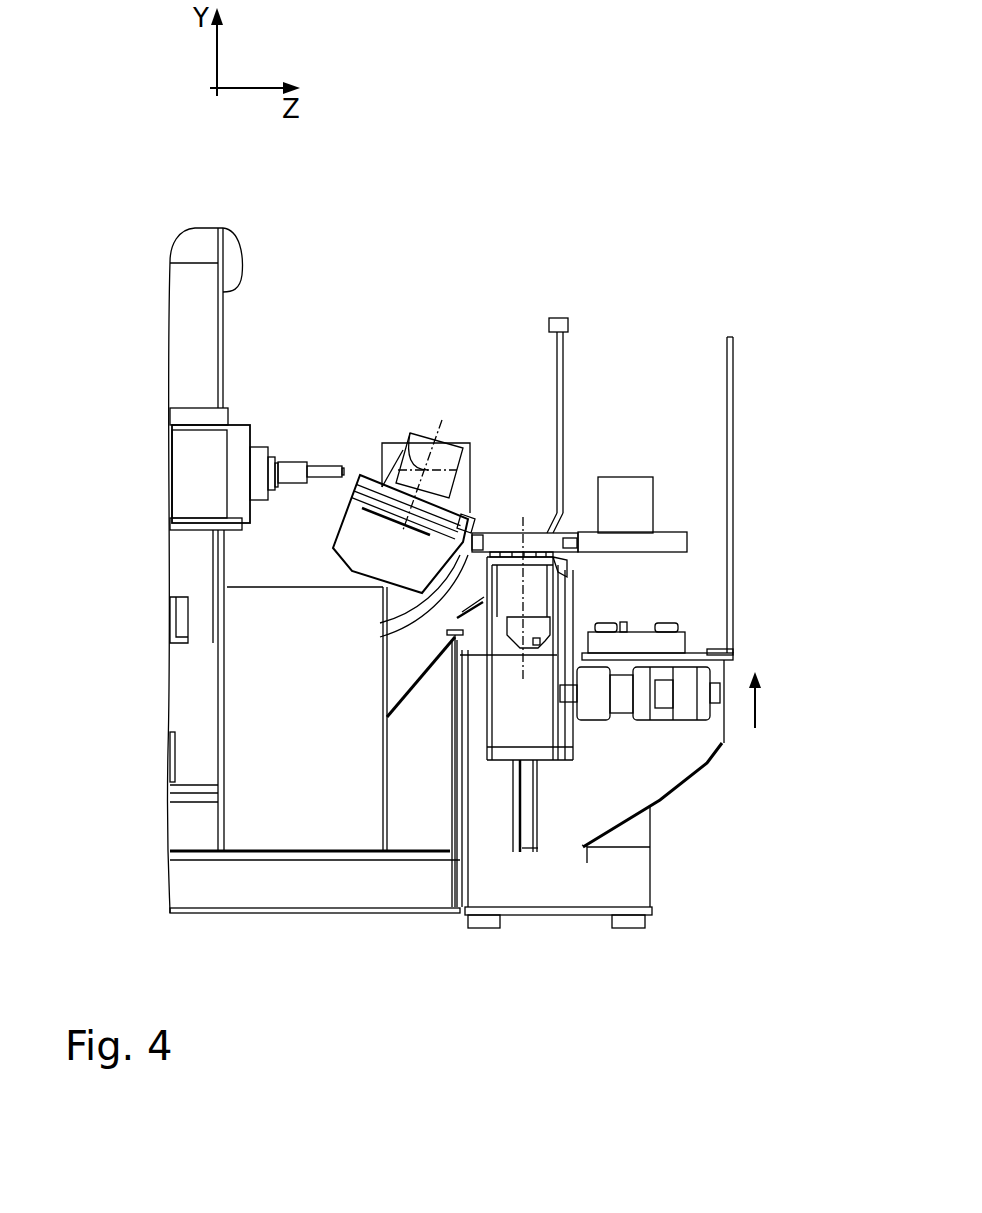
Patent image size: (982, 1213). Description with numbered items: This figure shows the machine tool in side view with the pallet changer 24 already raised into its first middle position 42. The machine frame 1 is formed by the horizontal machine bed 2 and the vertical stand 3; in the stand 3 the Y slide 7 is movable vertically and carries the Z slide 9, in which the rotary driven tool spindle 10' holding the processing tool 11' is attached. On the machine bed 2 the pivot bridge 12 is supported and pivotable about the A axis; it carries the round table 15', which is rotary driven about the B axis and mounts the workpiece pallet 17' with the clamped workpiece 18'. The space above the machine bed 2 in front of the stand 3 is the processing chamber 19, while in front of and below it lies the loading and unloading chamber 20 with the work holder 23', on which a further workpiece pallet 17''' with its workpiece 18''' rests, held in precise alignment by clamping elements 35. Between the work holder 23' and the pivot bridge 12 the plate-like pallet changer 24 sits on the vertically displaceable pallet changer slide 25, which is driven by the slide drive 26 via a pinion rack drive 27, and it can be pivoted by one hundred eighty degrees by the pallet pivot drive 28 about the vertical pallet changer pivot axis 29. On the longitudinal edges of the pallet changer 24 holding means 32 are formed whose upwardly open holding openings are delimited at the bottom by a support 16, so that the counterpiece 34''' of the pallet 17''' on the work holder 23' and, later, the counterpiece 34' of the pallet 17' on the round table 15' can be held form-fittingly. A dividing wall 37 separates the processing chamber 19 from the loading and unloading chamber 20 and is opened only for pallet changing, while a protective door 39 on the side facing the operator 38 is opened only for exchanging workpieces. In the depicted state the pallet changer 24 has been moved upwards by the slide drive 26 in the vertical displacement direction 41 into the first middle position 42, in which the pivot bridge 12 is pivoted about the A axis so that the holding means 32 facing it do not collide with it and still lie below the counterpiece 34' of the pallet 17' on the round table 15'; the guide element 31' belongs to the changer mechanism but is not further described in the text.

The machine frame 1 is at (684, 232).
The machine bed 2 is at (338, 898).
The stand 3 is at (243, 262).
The Y slide 7 is at (178, 572).
The Z slide 9 is at (173, 428).
The tool spindle 10' is at (285, 331).
The processing tool 11' is at (346, 319).
The pivot bridge 12 is at (345, 552).
The round table 15' is at (261, 506).
The support 16 is at (487, 615).
The workpiece pallet 17' is at (263, 481).
The workpiece pallet 17''' is at (681, 517).
The workpiece 18' is at (445, 337).
The workpiece 18''' is at (744, 474).
The processing chamber 19 is at (385, 391).
The loading and unloading chamber 20 is at (650, 587).
The work holder 23' is at (728, 684).
The pallet changer 24 is at (555, 560).
The pallet changer slide 25 is at (550, 728).
The slide drive 26 is at (657, 717).
The pinion rack drive 27 is at (578, 752).
The pallet pivot drive 28 is at (513, 666).
The pallet changer pivot axis 29 is at (470, 668).
The guide rod 31' is at (515, 895).
The holding means 32 is at (383, 619).
The counterpiece 34' is at (673, 464).
The counterpiece 34''' is at (727, 498).
The clamping elements 35 is at (683, 633).
The dividing wall 37 is at (563, 382).
The operator 38 is at (862, 696).
The protective door 39 is at (732, 369).
The displacement direction 41 is at (760, 697).
The first middle position 42 is at (700, 547).
The A axis A is at (410, 433).
The B axis B is at (445, 433).